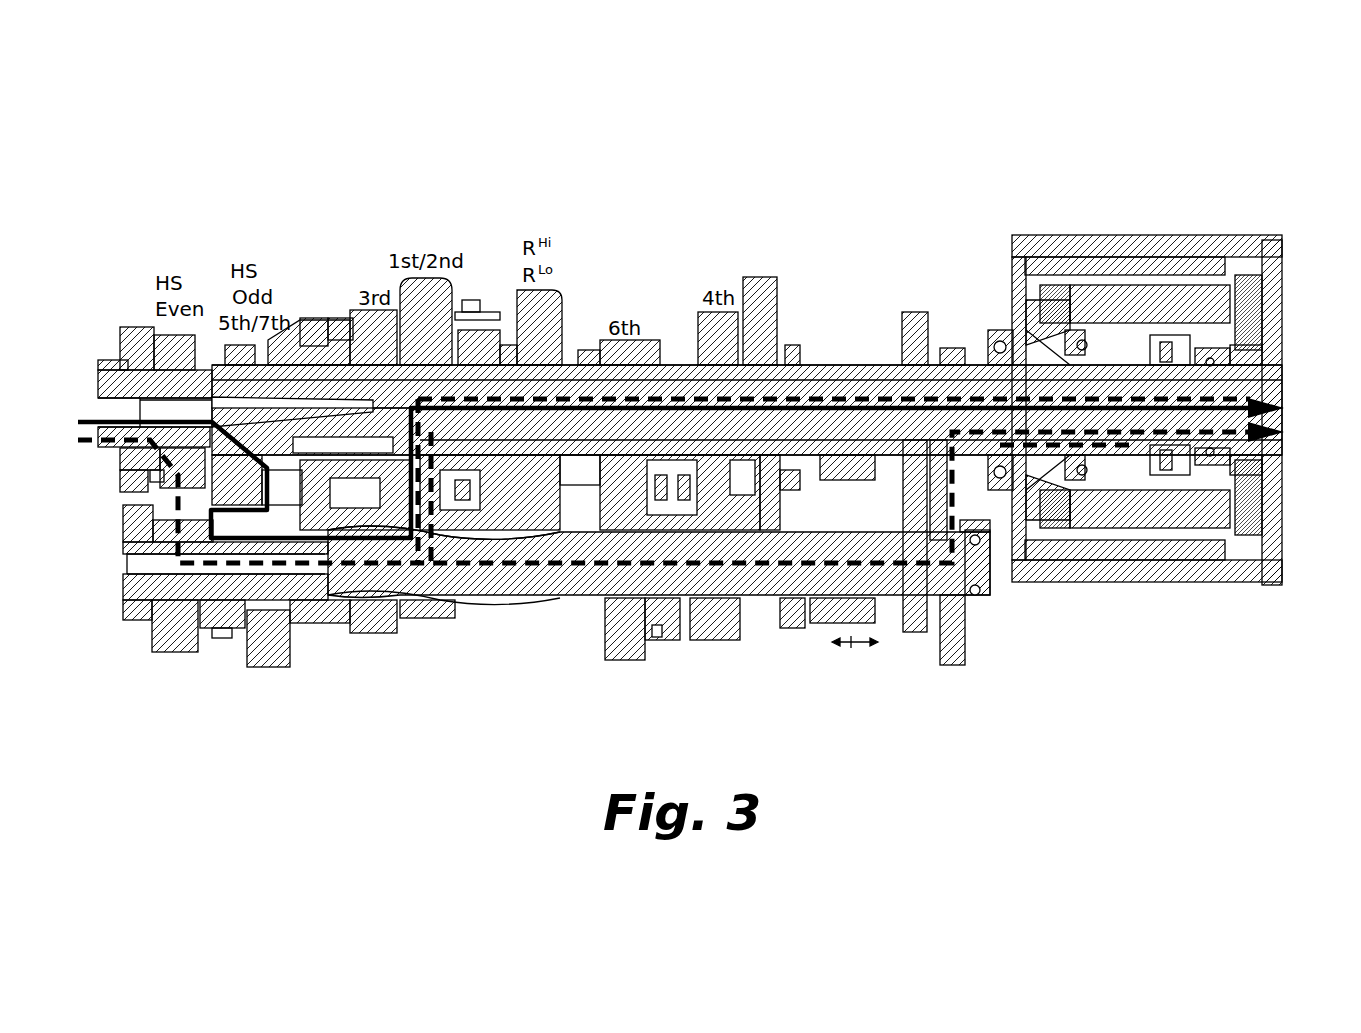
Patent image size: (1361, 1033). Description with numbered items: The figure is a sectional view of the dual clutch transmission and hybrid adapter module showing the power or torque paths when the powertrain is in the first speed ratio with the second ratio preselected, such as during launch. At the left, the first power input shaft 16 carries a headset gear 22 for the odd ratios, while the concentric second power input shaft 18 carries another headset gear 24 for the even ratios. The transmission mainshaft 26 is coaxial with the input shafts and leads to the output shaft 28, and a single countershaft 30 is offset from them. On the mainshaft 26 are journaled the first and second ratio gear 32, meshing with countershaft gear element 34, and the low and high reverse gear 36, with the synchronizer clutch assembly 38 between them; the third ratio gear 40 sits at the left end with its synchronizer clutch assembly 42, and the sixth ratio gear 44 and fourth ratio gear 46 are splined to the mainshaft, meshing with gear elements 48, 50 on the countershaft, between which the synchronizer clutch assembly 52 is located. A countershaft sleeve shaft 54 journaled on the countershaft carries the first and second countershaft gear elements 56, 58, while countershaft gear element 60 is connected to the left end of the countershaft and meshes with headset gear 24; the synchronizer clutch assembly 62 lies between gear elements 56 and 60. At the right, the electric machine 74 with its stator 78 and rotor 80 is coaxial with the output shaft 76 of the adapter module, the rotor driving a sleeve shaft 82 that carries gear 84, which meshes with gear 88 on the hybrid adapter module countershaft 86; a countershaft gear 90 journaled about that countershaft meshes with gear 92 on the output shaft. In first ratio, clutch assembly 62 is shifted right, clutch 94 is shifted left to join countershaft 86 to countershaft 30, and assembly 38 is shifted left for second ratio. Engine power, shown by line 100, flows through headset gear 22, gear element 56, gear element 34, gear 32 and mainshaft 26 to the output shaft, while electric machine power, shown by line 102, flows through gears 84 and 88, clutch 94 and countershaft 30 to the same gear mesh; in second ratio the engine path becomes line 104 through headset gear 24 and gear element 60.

The first power input shaft 16 is at (100, 386).
The second power input shaft 18 is at (118, 372).
The headset gear 22 is at (282, 345).
The headset gear 24 is at (162, 340).
The transmission mainshaft 26 is at (815, 372).
The output shaft 28 is at (1272, 455).
The countershaft 30 is at (520, 595).
The first ratio and second ratio gear 32 is at (402, 290).
The countershaft gear element 34 is at (425, 620).
The low reverse ratio and high reverse ratio gear 36 is at (550, 300).
The ratio change synchronizer clutch assembly 38 is at (470, 300).
The third ratio mainshaft gear 40 is at (342, 318).
The synchronizer clutch assembly 42 is at (320, 318).
The sixth ratio mainshaft gear 44 is at (645, 340).
The fourth ratio mainshaft gear 46 is at (740, 312).
The gear element 48 is at (622, 660).
The gear element 50 is at (715, 640).
The synchronizer clutch assembly 52 is at (665, 640).
The countershaft sleeve shaft 54 is at (315, 625).
The first countershaft gear element 56 is at (270, 668).
The second countershaft gear element 58 is at (370, 635).
The countershaft gear element 60 is at (170, 650).
The synchronizer clutch assembly 62 is at (225, 640).
The electric machine 74 is at (1258, 180).
The output shaft 76 is at (1275, 380).
The stator 78 is at (1248, 290).
The rotor 80 is at (1150, 300).
The sleeve shaft 82 is at (1000, 345).
The gear 84 is at (952, 348).
The hybrid adapter module countershaft 86 is at (975, 596).
The gear 88 is at (952, 665).
The countershaft gear 90 is at (915, 632).
The gear 92 is at (912, 312).
The clutch 94 is at (830, 675).
The line 100 is at (150, 515).
The line 102 is at (985, 560).
The line 104 is at (178, 565).